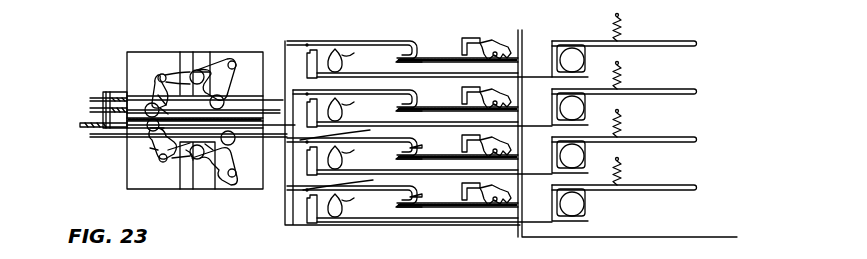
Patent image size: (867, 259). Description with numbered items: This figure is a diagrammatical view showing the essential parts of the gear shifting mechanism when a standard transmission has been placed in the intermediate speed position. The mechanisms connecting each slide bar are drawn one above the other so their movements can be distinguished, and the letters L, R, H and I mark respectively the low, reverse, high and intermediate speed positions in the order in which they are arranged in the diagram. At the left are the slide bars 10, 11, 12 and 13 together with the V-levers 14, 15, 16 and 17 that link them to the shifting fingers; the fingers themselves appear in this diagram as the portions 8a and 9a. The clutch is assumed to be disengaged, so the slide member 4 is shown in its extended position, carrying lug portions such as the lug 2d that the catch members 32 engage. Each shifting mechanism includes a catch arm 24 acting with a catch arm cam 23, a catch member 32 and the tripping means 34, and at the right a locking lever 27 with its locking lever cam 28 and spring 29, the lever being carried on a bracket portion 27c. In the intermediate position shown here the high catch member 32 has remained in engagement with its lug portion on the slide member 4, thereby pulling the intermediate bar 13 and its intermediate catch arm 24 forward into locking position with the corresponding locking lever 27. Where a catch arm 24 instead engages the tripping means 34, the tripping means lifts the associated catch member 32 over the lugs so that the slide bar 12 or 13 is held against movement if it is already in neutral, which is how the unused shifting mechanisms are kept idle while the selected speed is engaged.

The slide member 4 is at (430, 128).
The lever 8a is at (205, 150).
The lever 9a is at (193, 160).
The slide bar 10 is at (165, 100).
The slide bar 11 is at (168, 114).
The slide bar 12 is at (163, 128).
The slide bar 13 is at (157, 150).
The V-lever 14 is at (247, 40).
The V-lever 15 is at (197, 40).
The V-lever 16 is at (197, 142).
The V-lever 17 is at (213, 167).
The catch arm cam 23 is at (334, 153).
The catch arm 24 is at (356, 191).
The locking lever 27 is at (650, 62).
The key lever bracket 27c is at (307, 210).
The locking lever cam 28 is at (580, 108).
The spring 29 is at (617, 61).
The catch member 32 is at (505, 105).
The tripping means 34 is at (470, 137).
The latch 2d is at (507, 200).
The low speed position L is at (697, 57).
The reverse speed position R is at (697, 108).
The high speed position H is at (697, 152).
The intermediate speed position I is at (697, 202).